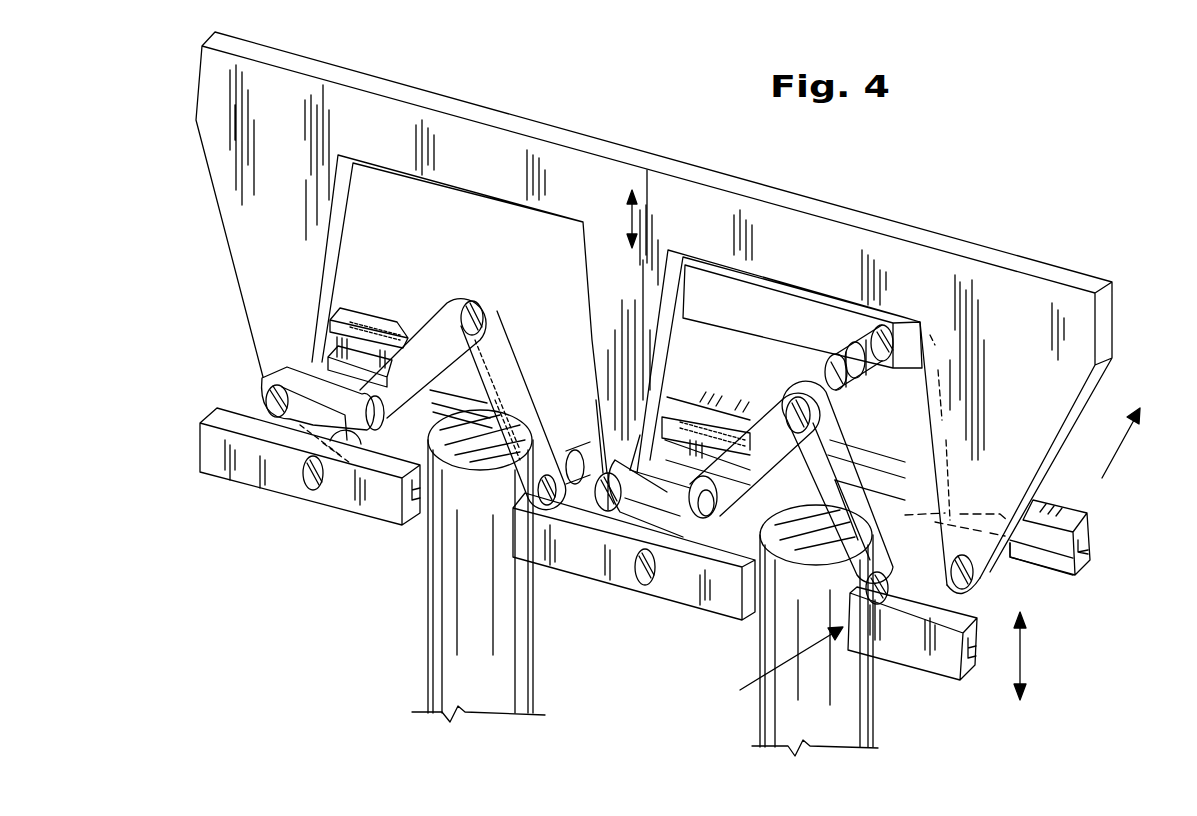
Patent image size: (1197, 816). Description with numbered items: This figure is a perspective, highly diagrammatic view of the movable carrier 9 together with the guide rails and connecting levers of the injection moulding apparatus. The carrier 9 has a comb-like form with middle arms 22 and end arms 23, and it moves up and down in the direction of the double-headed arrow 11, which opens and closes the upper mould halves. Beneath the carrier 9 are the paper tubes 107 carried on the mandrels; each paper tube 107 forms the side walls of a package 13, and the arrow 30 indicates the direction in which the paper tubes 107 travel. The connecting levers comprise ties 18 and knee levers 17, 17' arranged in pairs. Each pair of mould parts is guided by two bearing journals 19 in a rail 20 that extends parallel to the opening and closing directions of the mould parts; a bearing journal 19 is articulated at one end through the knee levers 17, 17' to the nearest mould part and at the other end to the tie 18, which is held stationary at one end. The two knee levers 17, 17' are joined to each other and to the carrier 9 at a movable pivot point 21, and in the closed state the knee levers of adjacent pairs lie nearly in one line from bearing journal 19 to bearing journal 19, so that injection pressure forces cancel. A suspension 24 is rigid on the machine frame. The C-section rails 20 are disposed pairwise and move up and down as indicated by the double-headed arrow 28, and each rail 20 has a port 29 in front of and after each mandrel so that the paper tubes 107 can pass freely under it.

The movable carrier 9 is at (948, 297).
The double-headed arrow 11 is at (642, 217).
The package 13 is at (327, 475).
The knee lever 17 is at (405, 532).
The knee lever 17' is at (641, 552).
The tie 18 is at (403, 373).
The bearing journal 19 is at (662, 567).
The rail 20 is at (933, 667).
The movable pivot point 21 is at (450, 305).
The middle arm 22 is at (613, 267).
The end arm 23 is at (255, 215).
The suspension 24 is at (733, 293).
The double-headed arrow 28 is at (1028, 660).
The port 29 is at (778, 673).
The arrow 30 is at (1123, 447).
The paper tube 107 is at (462, 603).